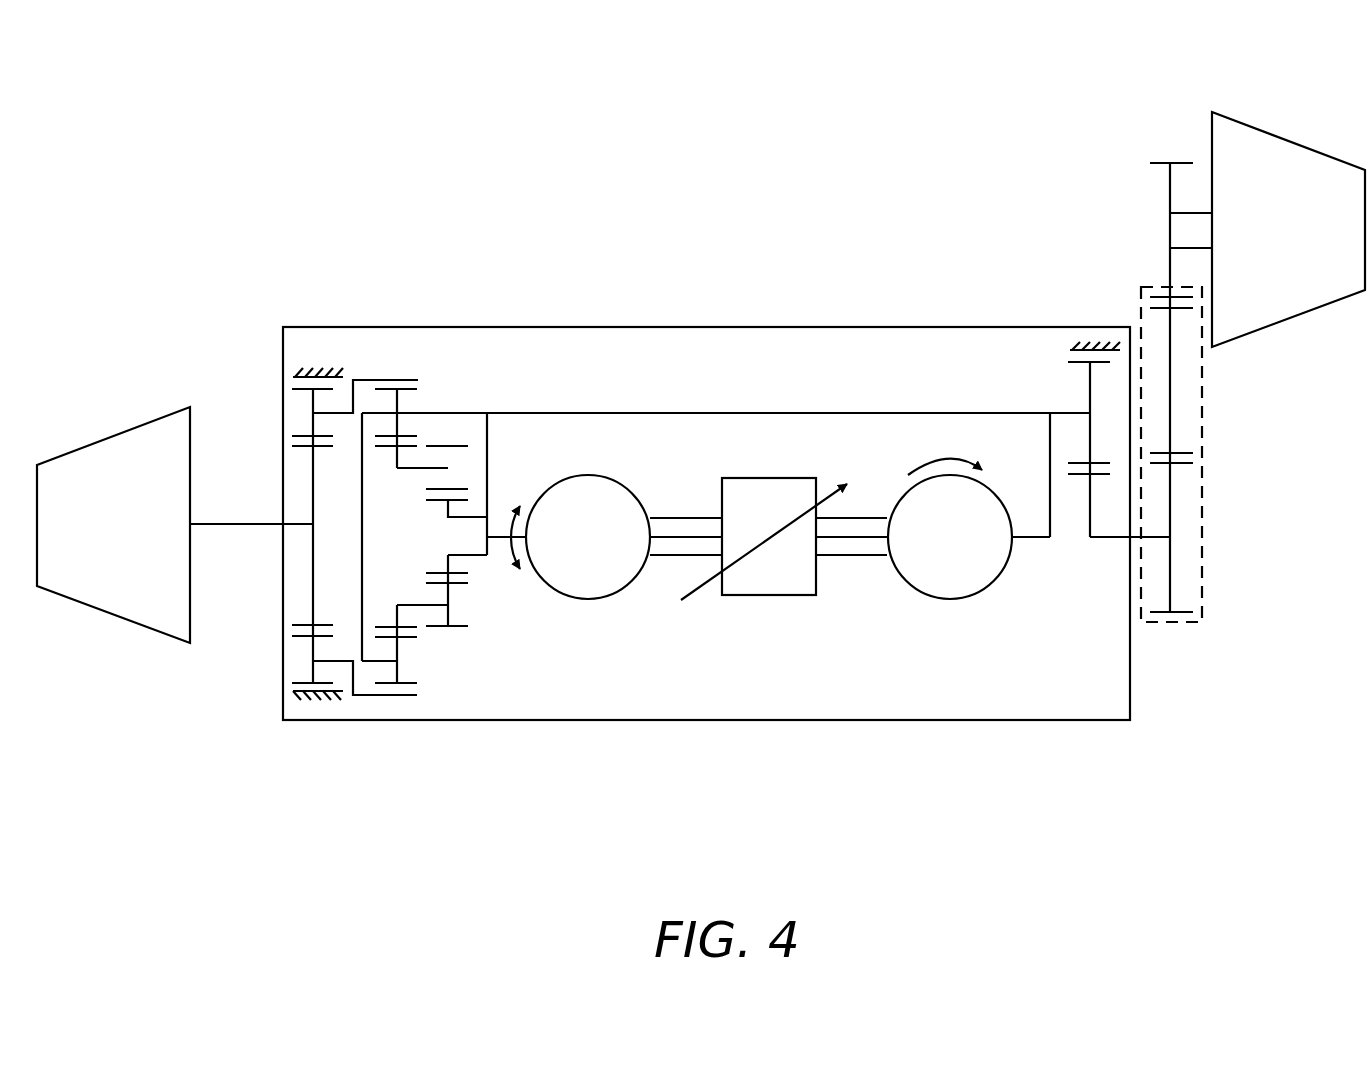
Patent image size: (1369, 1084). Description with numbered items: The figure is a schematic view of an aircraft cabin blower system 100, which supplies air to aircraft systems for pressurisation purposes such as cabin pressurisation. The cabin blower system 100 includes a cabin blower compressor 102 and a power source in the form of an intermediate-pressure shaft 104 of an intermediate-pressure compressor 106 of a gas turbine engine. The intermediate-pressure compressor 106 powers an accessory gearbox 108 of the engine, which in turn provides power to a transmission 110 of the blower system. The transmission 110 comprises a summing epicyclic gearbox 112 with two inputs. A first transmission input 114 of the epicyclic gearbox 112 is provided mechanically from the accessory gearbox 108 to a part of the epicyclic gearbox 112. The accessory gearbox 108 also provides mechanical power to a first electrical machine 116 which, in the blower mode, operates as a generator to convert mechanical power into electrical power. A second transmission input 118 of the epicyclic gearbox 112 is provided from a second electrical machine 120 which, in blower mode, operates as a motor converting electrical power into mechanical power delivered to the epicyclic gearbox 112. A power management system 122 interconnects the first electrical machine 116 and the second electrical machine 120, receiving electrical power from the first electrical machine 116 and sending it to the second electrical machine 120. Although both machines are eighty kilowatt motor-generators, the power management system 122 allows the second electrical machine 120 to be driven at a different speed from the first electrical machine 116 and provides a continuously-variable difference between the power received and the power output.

The cabin blower system 100 is at (192, 214).
The cabin blower compressor 102 is at (111, 434).
The intermediate-pressure shaft 104 is at (1190, 248).
The intermediate-pressure compressor 106 is at (1288, 138).
The accessory gearbox 108 is at (1202, 430).
The transmission 110 is at (375, 313).
The summing epicyclic gearbox 112 is at (408, 662).
The first transmission input 114 is at (427, 413).
The first electrical machine 116 is at (950, 477).
The second transmission input 118 is at (514, 538).
The second electrical machine 120 is at (620, 484).
The power management system 122 is at (768, 595).